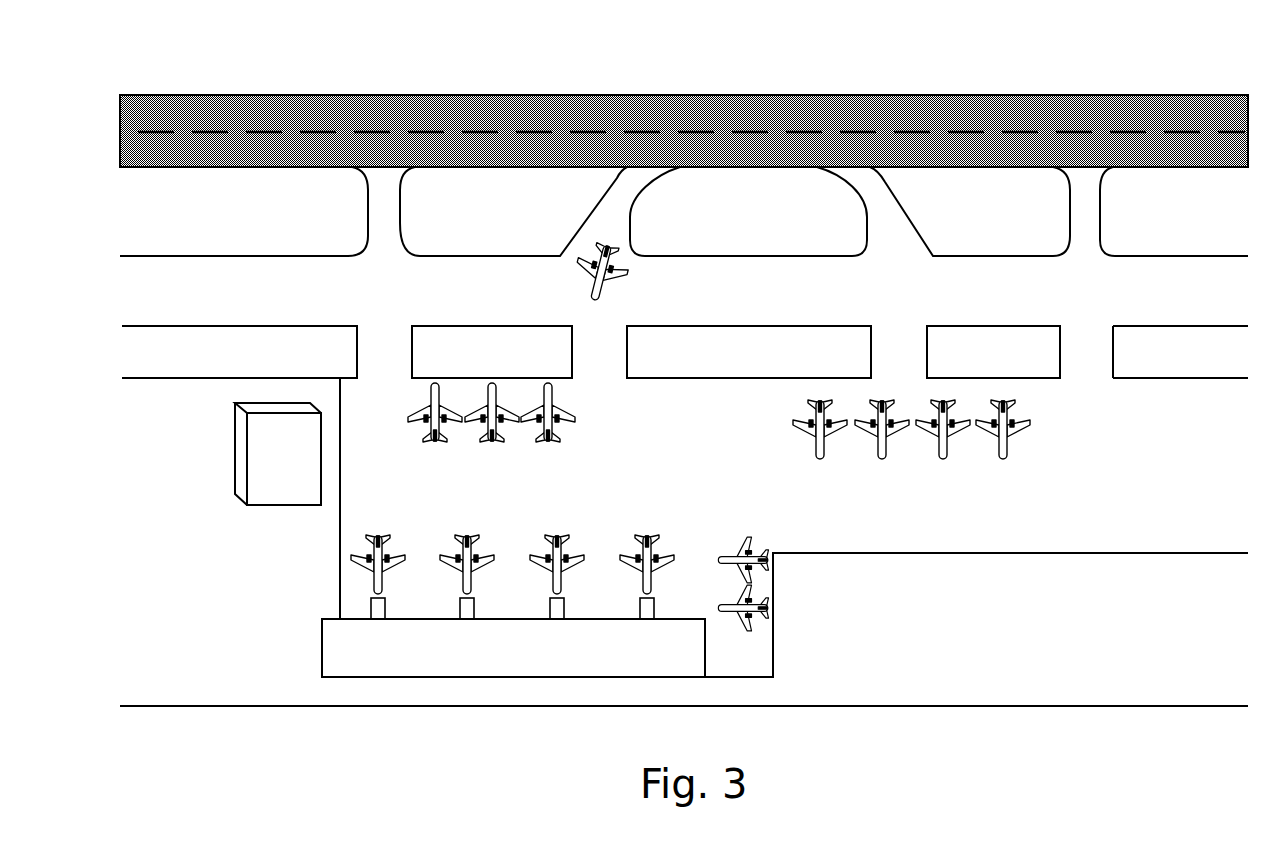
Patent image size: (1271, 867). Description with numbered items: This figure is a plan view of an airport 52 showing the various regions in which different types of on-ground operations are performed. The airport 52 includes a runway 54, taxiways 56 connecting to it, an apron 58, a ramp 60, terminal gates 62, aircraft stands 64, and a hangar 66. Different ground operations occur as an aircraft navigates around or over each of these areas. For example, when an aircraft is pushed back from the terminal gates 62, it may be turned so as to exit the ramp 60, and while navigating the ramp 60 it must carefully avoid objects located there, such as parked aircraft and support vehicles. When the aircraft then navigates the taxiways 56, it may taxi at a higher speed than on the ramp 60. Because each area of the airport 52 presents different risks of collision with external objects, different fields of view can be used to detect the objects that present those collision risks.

The airport 52 is at (1067, 610).
The runway 54 is at (815, 115).
The taxiways 56 is at (1018, 290).
The apron 58 is at (605, 387).
The ramp 60 is at (417, 453).
The terminal gates 62 is at (358, 644).
The aircraft stands 64 is at (1020, 428).
The hangar 66 is at (278, 448).